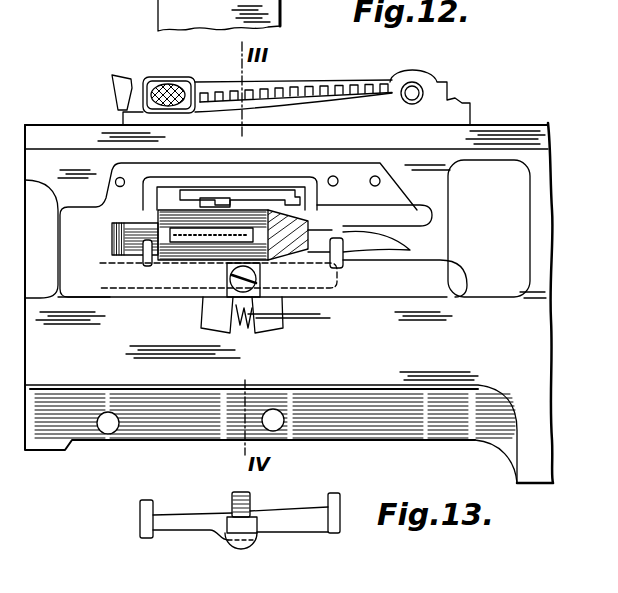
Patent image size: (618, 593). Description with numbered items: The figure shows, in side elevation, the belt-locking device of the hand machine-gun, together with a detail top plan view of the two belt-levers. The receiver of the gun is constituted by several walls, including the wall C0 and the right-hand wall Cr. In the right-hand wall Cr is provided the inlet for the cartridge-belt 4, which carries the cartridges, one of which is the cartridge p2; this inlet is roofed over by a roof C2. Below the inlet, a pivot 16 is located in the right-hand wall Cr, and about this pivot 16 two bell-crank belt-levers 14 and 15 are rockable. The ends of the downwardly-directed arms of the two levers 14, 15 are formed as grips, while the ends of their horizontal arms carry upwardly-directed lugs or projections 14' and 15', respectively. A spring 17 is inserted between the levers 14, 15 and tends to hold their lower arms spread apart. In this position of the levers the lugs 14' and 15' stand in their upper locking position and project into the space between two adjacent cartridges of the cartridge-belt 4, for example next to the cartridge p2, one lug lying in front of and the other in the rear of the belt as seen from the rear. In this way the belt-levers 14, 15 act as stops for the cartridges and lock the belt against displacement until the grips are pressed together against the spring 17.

In FIG. 12, the receiver wall C0 is at (73, 133).
In FIG. 12, the roof C2 is at (207, 172).
In FIG. 12, the right-hand wall of the receiver Cr is at (285, 324).
In FIG. 12, the cartridge p2 is at (320, 212).
In FIG. 12, the cartridge-belt 4 is at (185, 237).
In FIG. 12, the bell-crank belt-lever 14 is at (203, 321).
In FIG. 13, the bell-crank belt-lever 14 is at (192, 545).
In FIG. 12, the lug 14' is at (117, 298).
In FIG. 13, the lug 14' is at (125, 518).
In FIG. 12, the bell-crank belt-lever 15 is at (285, 334).
In FIG. 13, the bell-crank belt-lever 15 is at (289, 543).
In FIG. 12, the lug 15' is at (363, 264).
In FIG. 13, the lug 15' is at (316, 509).
In FIG. 12, the pivot 16 is at (253, 290).
In FIG. 13, the pivot 16 is at (232, 497).
In FIG. 12, the spring 17 is at (245, 320).